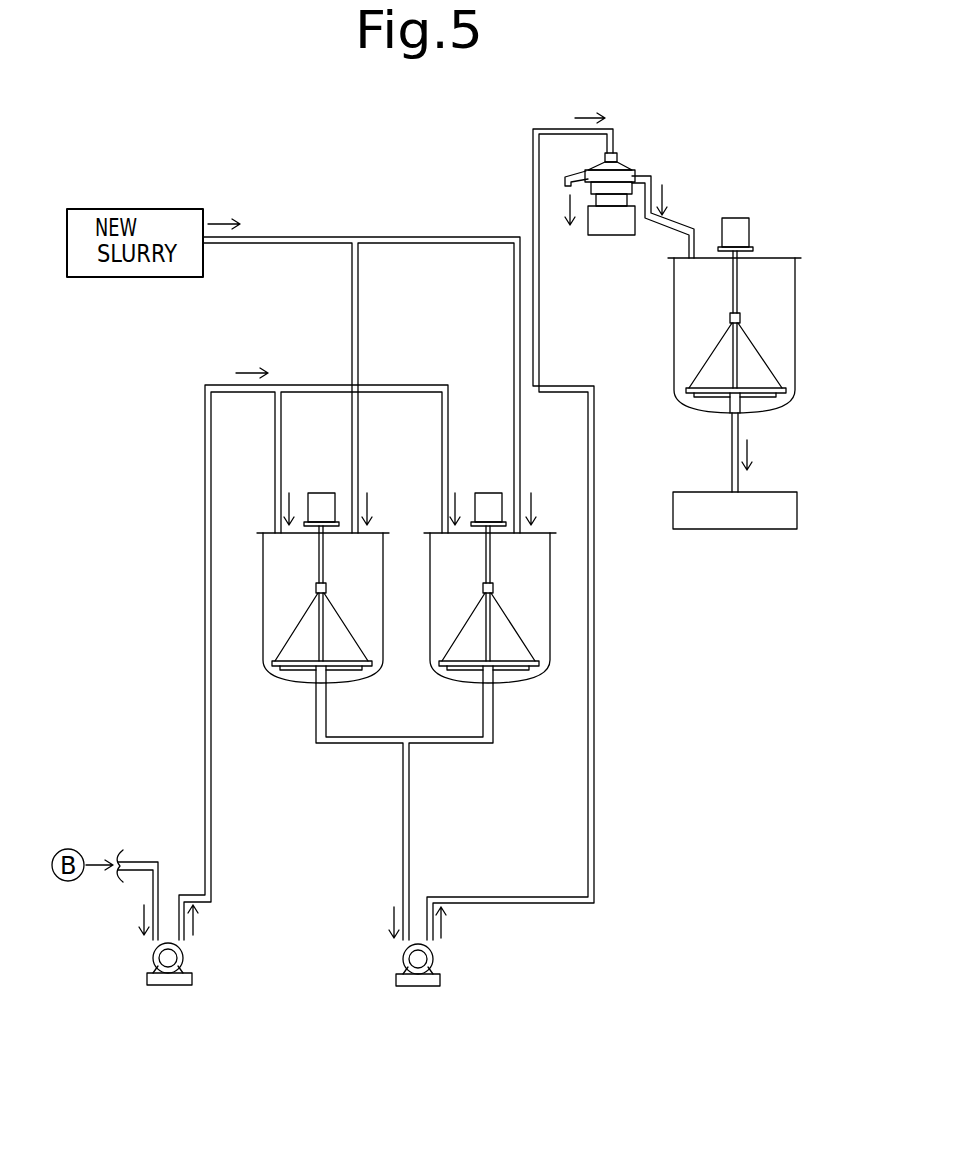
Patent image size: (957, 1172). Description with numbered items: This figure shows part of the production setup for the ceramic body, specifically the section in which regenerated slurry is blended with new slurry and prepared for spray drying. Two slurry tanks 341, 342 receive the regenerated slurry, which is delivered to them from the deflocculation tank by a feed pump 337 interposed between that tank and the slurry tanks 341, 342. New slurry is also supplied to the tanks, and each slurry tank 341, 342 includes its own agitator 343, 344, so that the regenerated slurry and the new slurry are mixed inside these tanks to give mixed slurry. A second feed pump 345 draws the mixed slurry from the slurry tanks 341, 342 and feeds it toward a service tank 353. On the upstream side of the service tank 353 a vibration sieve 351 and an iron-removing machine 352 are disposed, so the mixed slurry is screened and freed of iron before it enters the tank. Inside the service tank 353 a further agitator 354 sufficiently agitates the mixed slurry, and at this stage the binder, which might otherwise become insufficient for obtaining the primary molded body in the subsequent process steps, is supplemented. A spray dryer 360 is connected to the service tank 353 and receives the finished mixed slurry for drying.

The feed pump 337 is at (192, 977).
The slurry tank 341 is at (280, 578).
The slurry tank 342 is at (530, 582).
The agitator 343 is at (303, 672).
The agitator 344 is at (465, 672).
The feed pump 345 is at (438, 977).
The vibration sieve 351 is at (603, 165).
The iron-removing machine 352 is at (612, 222).
The service tank 353 is at (772, 272).
The agitator 354 is at (735, 226).
The spray dryer 360 is at (745, 517).